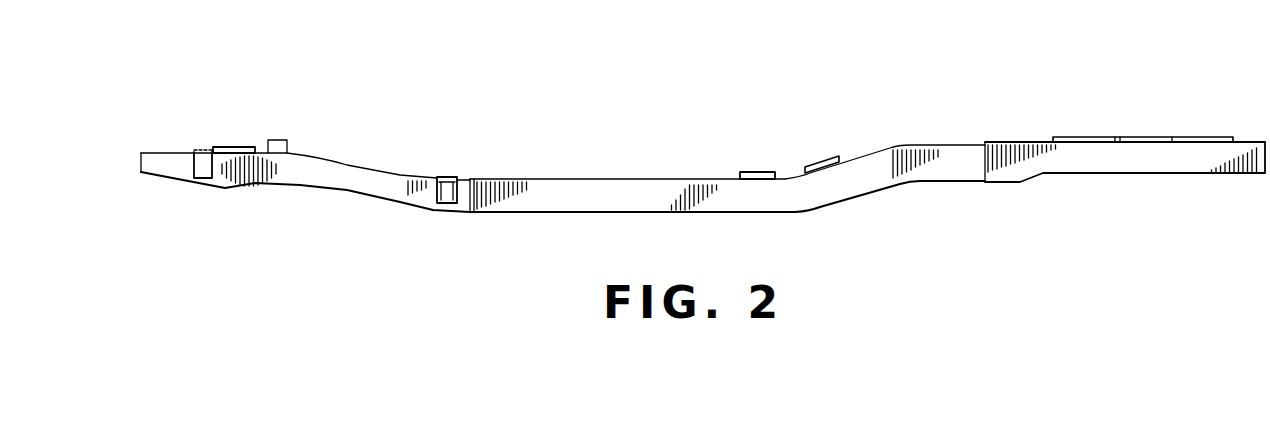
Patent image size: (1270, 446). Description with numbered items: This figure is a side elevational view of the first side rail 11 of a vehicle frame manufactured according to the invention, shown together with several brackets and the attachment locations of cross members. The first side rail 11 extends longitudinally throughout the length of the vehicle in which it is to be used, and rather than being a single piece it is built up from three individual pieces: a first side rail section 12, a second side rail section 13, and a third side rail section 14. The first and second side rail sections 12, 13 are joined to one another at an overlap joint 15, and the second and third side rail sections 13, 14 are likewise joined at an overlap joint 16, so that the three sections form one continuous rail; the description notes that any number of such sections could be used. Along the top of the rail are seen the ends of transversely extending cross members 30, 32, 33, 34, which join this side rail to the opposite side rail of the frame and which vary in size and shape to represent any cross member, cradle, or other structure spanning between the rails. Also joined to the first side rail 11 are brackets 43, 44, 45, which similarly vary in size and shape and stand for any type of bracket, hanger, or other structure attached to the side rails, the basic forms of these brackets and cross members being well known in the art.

The first side rail 11 is at (620, 166).
The first side rail section 12 is at (337, 175).
The second side rail section 13 is at (657, 197).
The third side rail section 14 is at (1153, 163).
The overlap joint 15 is at (477, 213).
The overlap joint 16 is at (980, 187).
The cross member 30 is at (231, 148).
The cross member 32 is at (757, 172).
The cross member 33 is at (820, 163).
The cross member 34 is at (1107, 137).
The bracket 43 is at (208, 157).
The bracket 44 is at (274, 140).
The bracket 45 is at (445, 190).